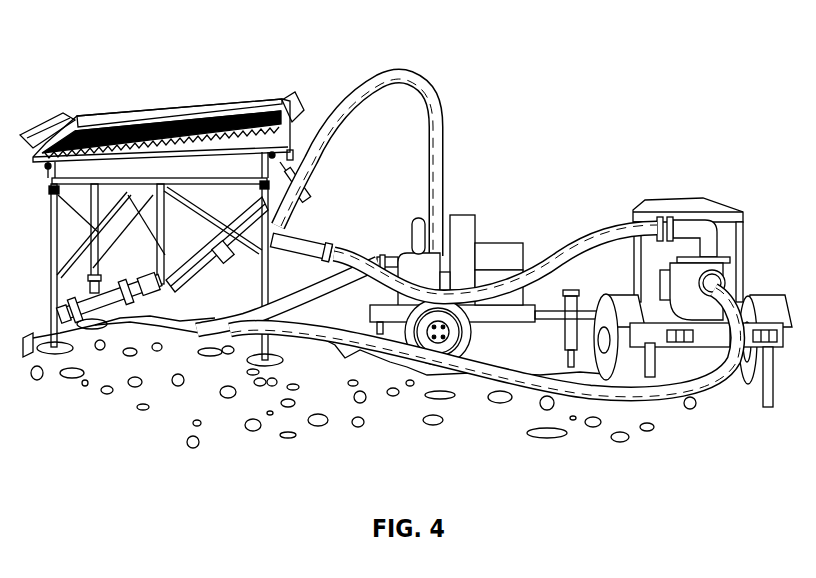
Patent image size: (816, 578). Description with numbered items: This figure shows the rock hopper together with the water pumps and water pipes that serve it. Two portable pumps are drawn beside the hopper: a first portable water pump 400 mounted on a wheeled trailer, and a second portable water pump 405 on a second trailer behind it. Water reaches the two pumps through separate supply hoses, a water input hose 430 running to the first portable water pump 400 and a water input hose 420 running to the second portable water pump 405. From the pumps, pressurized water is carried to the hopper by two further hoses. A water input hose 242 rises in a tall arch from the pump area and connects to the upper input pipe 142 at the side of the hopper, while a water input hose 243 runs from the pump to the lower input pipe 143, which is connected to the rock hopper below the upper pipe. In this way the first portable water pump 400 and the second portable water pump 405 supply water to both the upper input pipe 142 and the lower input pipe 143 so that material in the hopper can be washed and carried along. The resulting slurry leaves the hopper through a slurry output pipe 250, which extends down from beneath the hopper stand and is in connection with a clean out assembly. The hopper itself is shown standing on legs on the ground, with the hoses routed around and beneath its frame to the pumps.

The upper input pipe 142 is at (304, 196).
The lower input pipe 143 is at (300, 233).
The water input hose 242 is at (402, 72).
The water input hose 243 is at (367, 268).
The slurry output pipe 250 is at (33, 347).
The first portable water pump 400 is at (483, 328).
The second portable water pump 405 is at (690, 205).
The water input hose 420 is at (660, 388).
The water input hose 430 is at (330, 310).